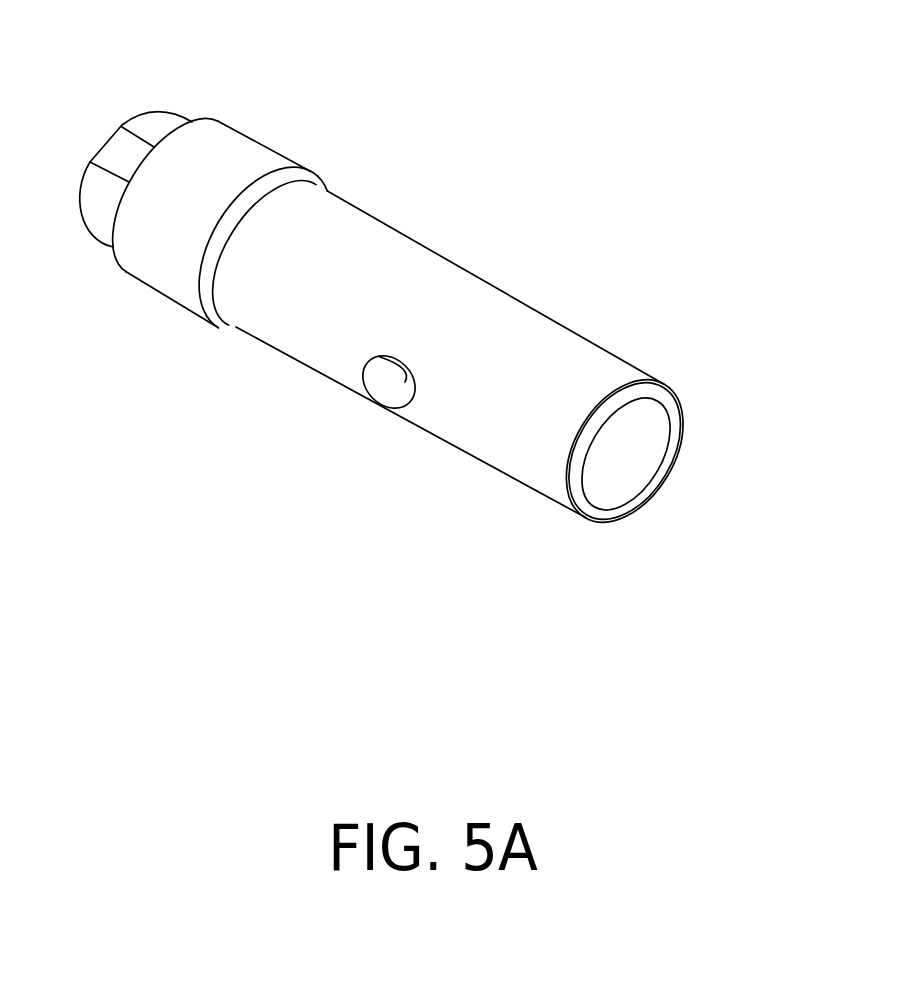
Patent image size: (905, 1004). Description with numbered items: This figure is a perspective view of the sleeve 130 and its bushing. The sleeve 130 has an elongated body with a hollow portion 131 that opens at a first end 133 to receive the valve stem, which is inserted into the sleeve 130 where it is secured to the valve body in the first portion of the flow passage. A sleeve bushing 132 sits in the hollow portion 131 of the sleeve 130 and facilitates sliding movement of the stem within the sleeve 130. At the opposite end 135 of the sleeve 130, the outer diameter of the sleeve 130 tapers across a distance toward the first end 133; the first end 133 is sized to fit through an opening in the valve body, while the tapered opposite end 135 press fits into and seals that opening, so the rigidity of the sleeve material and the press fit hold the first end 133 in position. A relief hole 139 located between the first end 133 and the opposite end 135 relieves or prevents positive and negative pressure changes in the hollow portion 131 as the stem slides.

The sleeve 130 is at (296, 462).
The hollow portion 131 is at (638, 453).
The sleeve bushing 132 is at (683, 428).
The first end 133 is at (668, 388).
The opposite end 135 is at (209, 120).
The relief hole 139 is at (392, 383).